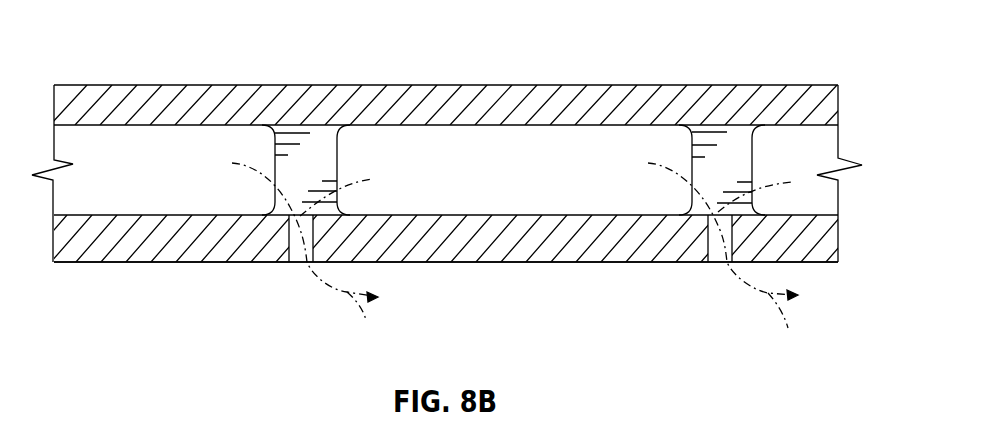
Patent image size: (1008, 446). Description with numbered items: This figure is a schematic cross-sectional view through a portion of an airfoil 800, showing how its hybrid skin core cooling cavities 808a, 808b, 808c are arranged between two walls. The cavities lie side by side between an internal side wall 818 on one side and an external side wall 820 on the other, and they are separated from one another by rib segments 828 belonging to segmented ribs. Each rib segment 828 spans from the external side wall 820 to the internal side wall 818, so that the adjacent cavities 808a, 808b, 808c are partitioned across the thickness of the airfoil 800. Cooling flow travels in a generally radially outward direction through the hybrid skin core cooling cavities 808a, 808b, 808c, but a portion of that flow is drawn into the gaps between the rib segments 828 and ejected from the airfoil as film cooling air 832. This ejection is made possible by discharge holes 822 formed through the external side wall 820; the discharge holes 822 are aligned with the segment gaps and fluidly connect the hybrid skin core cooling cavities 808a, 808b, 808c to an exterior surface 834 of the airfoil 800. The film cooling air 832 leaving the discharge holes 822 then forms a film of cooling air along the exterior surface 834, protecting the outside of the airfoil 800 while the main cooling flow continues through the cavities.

The airfoil 800 is at (103, 44).
The internal side wall 818 is at (509, 92).
The external side wall 820 is at (118, 257).
The discharge holes 822 is at (292, 267).
The rib segments 828 is at (320, 142).
The film cooling air 832 is at (497, 257).
The exterior surface 834 is at (158, 264).
The hybrid skin core cooling cavity 808a is at (155, 182).
The hybrid skin core cooling cavity 808b is at (507, 182).
The hybrid skin core cooling cavity 808c is at (755, 166).